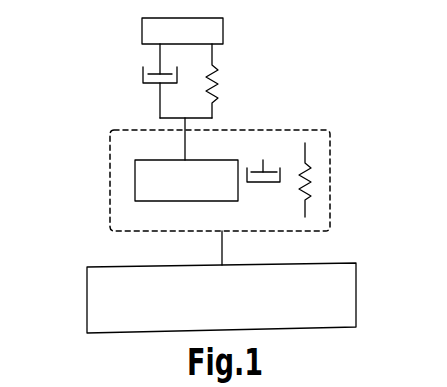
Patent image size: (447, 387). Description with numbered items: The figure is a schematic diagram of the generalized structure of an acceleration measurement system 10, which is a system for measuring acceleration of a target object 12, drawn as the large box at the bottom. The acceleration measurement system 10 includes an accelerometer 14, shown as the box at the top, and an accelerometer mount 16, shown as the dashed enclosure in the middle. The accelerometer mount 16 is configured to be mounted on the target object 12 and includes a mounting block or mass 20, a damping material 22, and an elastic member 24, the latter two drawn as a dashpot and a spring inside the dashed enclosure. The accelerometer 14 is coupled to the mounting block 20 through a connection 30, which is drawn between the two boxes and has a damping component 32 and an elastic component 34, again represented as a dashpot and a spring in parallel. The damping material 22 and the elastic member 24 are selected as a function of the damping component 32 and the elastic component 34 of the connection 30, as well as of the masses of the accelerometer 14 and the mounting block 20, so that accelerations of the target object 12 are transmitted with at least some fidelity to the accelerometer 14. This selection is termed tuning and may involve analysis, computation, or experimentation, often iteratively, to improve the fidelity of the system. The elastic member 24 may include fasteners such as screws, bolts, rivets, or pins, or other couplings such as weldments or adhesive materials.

The acceleration measurement system 10 is at (88, 60).
The target object 12 is at (342, 262).
The accelerometer 14 is at (217, 17).
The accelerometer mount 16 is at (320, 127).
The mounting block 20 is at (135, 178).
The damping material 22 is at (263, 182).
The elastic member 24 is at (308, 163).
The connection 30 is at (248, 53).
The damping component 32 is at (140, 77).
The elastic component 34 is at (222, 72).